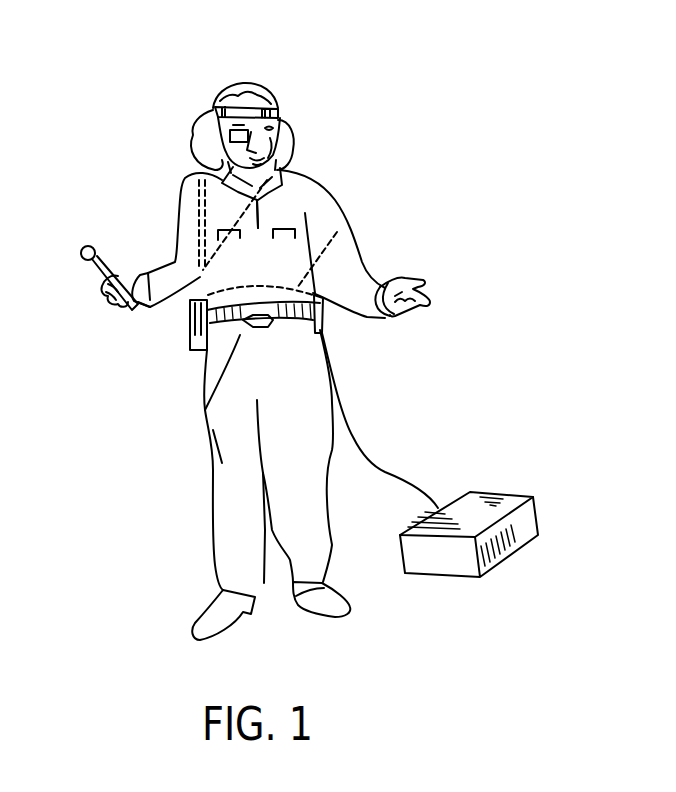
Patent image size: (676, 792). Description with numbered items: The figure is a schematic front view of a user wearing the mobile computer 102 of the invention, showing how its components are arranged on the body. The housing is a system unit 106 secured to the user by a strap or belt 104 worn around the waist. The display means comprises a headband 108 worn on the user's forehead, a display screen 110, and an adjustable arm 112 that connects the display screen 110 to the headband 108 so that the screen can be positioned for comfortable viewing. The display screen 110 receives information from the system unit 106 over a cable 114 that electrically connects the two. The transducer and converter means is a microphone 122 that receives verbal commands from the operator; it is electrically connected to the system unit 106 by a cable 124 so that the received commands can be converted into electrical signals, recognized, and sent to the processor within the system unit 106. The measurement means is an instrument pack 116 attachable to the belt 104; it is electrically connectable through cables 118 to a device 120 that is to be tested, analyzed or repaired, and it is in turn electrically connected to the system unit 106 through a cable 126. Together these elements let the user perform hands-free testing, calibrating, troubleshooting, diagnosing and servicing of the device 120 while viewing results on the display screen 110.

The mobile computer 102 is at (118, 200).
The belt 104 is at (213, 430).
The system unit 106 is at (188, 317).
The headband 108 is at (276, 88).
The display screen 110 is at (197, 153).
The adjustable arm 112 is at (211, 133).
The cable 114 is at (193, 130).
The instrument pack 116 is at (320, 310).
The cables 118 is at (360, 440).
The device 120 is at (472, 498).
The microphone 122 is at (287, 120).
The cable 124 is at (290, 157).
The cable 126 is at (341, 228).